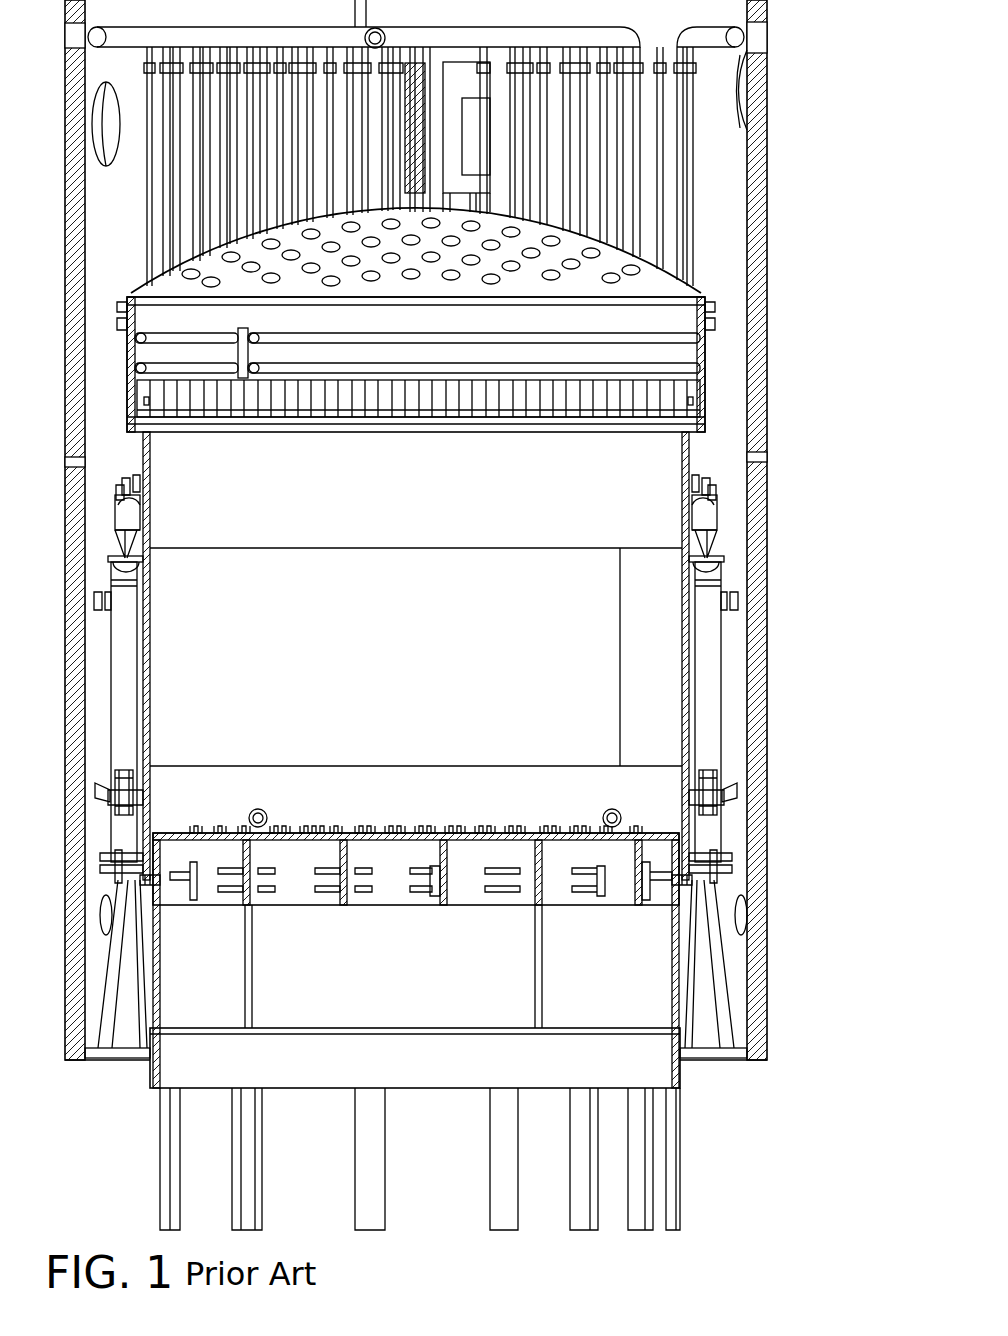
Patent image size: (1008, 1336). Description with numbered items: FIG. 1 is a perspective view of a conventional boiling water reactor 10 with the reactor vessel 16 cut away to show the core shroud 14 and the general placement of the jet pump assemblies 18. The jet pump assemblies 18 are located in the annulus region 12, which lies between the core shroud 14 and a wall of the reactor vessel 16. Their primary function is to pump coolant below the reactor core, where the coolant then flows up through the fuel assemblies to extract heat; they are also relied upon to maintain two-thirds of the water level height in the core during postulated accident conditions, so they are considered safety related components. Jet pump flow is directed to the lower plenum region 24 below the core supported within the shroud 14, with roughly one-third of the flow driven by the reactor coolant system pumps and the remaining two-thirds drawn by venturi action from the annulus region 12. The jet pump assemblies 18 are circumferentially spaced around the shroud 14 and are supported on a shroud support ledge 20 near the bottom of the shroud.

The boiling water reactor 10 is at (782, 117).
The annulus region 12 is at (727, 380).
The core shroud 14 is at (690, 452).
The reactor vessel 16 is at (767, 255).
The jet pump assemblies 18 is at (724, 661).
The shroud support ledge 20 is at (763, 1013).
The lower plenum region 24 is at (451, 1171).